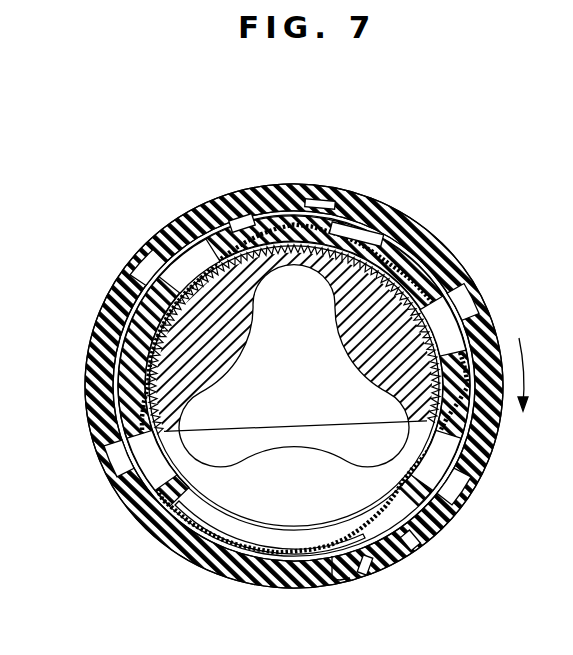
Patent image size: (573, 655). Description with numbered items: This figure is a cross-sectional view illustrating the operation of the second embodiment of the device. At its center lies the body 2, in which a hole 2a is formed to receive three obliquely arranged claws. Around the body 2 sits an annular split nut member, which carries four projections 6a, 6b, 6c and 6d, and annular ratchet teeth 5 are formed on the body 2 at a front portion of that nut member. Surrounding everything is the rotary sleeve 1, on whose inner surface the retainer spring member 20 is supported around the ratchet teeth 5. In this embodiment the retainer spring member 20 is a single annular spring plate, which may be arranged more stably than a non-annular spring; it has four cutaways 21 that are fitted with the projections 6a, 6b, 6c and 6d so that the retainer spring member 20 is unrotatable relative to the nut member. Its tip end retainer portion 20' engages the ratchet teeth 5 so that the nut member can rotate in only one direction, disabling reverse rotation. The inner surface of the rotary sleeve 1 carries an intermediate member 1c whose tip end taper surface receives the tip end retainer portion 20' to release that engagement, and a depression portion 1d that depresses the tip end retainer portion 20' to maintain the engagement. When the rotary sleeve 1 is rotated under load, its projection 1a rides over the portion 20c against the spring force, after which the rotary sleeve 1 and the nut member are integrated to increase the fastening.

The rotary sleeve 1 is at (276, 185).
The projection 1a is at (367, 577).
The intermediate member 1c is at (358, 197).
The depression portion 1d is at (323, 193).
The body 2 is at (103, 383).
The hole 2a is at (257, 315).
The ratchet teeth 5 is at (423, 240).
The projection 6a is at (463, 297).
The projection 6b is at (463, 507).
The projection 6c is at (123, 463).
The projection 6d is at (143, 250).
The retainer spring member 20 is at (270, 571).
The tip end retainer portion 20' is at (226, 192).
The projection 20c is at (330, 580).
The cutaways 21 is at (413, 553).